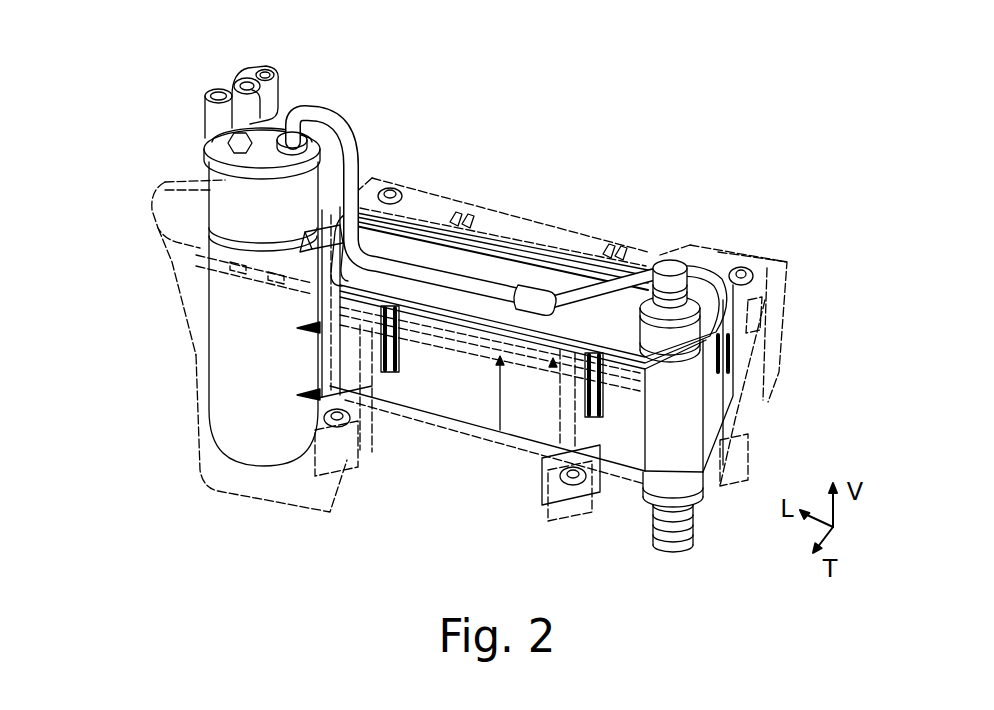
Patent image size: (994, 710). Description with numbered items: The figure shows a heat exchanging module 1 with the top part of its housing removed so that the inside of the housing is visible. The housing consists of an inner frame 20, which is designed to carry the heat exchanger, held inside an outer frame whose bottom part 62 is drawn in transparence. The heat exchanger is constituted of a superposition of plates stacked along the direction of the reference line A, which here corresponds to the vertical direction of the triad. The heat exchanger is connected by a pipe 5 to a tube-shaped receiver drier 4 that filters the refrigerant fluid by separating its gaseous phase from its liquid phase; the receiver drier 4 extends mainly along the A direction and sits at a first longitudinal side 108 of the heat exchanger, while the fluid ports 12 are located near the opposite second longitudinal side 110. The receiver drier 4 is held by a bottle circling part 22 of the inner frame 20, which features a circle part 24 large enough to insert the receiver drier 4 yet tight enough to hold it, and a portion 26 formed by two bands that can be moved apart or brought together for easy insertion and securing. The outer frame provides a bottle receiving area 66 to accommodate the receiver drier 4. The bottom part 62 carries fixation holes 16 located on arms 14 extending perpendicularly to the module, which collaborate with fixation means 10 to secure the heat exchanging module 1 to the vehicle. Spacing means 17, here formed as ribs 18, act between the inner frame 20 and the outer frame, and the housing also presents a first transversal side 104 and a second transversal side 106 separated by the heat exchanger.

The heat exchanging module 1 is at (120, 190).
The receiver drier 4 is at (226, 156).
The pipe 5 is at (467, 283).
The fixation means 10 is at (575, 517).
The fluid ports 12 is at (240, 112).
The arms 14 is at (320, 447).
The fixation holes 16 is at (577, 503).
The spacing means 17 is at (392, 372).
The ribs 18 is at (378, 336).
The inner frame 20 is at (490, 335).
The bottle circling part 22 is at (195, 277).
The circle part 24 is at (325, 212).
The portion 26 is at (265, 334).
The bottom part 62 is at (747, 480).
The bottle receiving area 66 is at (227, 463).
The first transversal side 104 is at (510, 162).
The second transversal side 106 is at (553, 364).
The first longitudinal side 108 is at (320, 232).
The second longitudinal side 110 is at (753, 307).
The reference line A is at (500, 430).